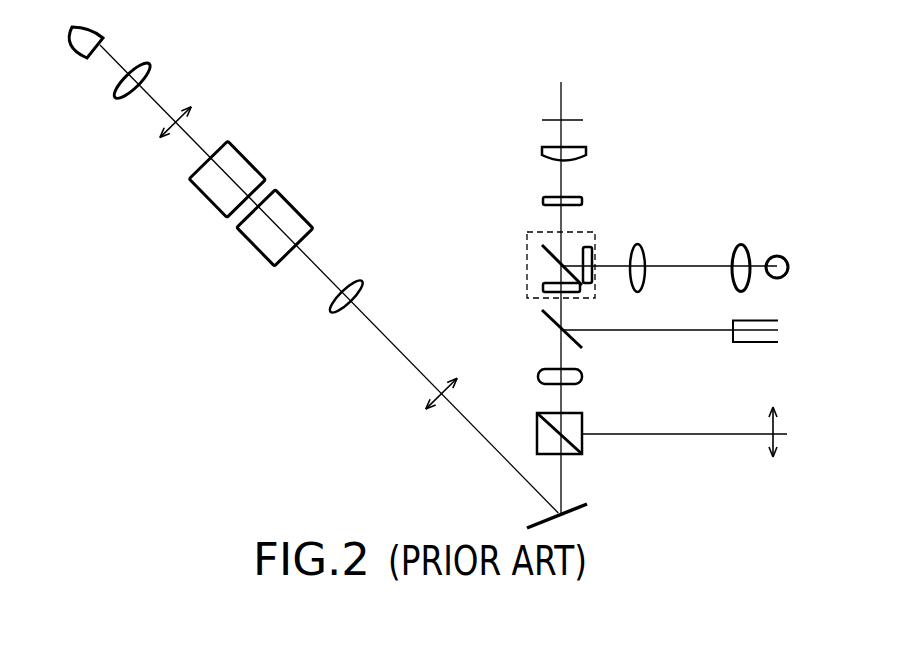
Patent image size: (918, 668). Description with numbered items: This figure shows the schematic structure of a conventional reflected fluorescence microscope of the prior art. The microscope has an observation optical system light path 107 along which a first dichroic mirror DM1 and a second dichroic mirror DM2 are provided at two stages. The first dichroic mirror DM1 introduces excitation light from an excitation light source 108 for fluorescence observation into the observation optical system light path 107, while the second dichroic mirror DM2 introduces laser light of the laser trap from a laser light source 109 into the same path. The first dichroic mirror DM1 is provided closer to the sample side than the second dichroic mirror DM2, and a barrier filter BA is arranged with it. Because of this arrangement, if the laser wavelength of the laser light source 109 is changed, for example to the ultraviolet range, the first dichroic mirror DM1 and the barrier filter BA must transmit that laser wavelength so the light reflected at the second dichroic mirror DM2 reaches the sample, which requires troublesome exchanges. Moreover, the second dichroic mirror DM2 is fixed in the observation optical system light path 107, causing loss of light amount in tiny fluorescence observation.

The observation optical system light path 107 is at (562, 101).
The excitation light source 108 is at (776, 257).
The laser light source 109 is at (753, 343).
The first dichroic mirror DM1 is at (547, 245).
The second dichroic mirror DM2 is at (580, 342).
The barrier filter BA is at (543, 288).